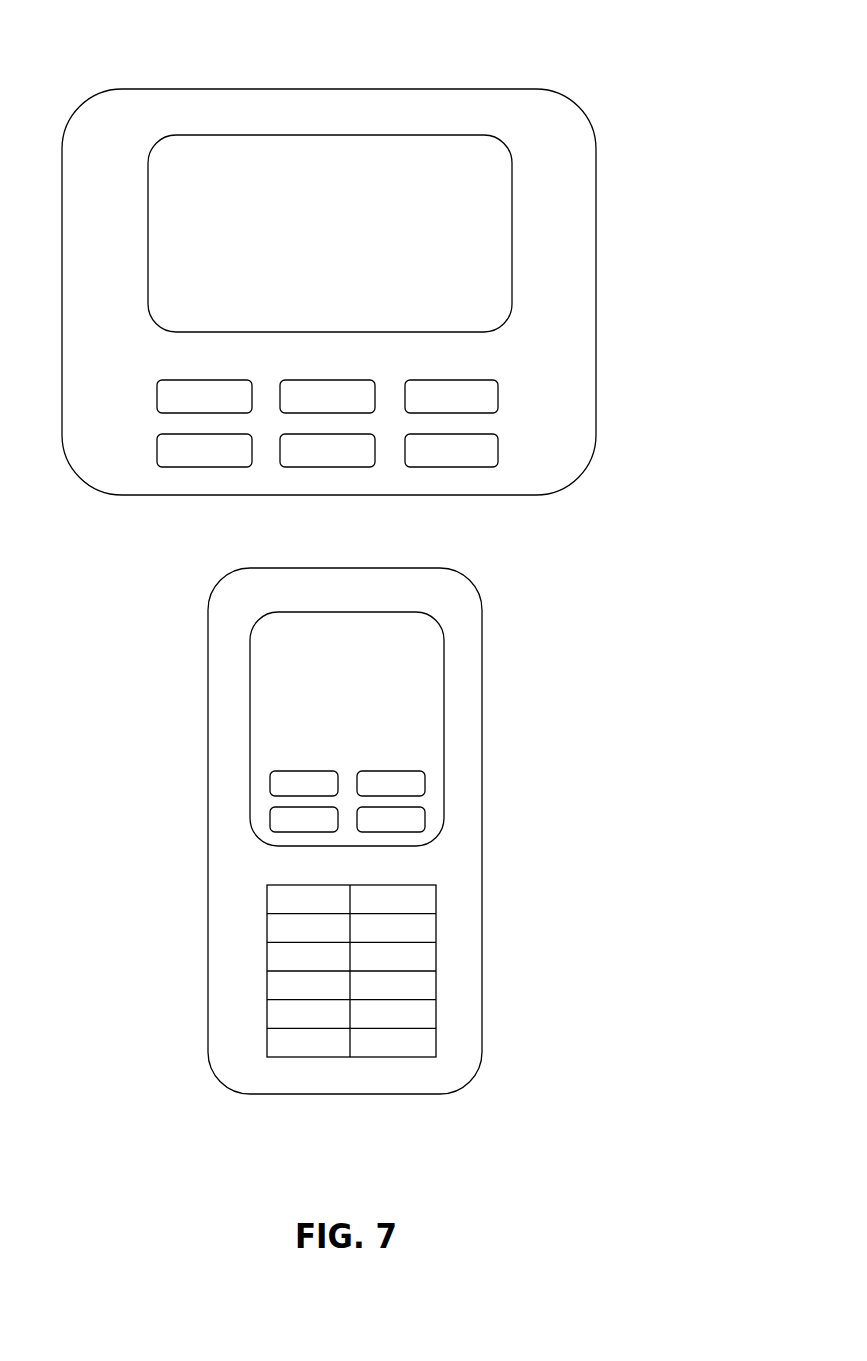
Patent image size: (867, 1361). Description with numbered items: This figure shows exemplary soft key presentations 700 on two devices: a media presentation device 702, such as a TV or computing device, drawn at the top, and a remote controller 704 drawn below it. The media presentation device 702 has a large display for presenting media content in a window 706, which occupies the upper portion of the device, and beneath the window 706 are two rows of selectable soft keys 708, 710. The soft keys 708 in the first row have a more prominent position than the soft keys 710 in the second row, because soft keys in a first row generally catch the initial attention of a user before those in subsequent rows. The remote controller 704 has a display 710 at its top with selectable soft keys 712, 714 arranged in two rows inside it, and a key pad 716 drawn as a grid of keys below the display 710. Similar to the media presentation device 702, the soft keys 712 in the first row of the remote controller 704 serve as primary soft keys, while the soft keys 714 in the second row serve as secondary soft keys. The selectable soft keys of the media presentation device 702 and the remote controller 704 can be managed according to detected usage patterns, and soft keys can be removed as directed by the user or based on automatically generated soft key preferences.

The user interface devices 700 is at (373, 1189).
The media presentation device 702 is at (533, 87).
The remote controller 704 is at (481, 608).
The window 706 is at (508, 242).
The soft keys 708 is at (498, 385).
The soft keys / display 710 is at (498, 445).
The primary soft keys 712 is at (425, 778).
The secondary soft keys 714 is at (425, 817).
The key pad 716 is at (397, 898).